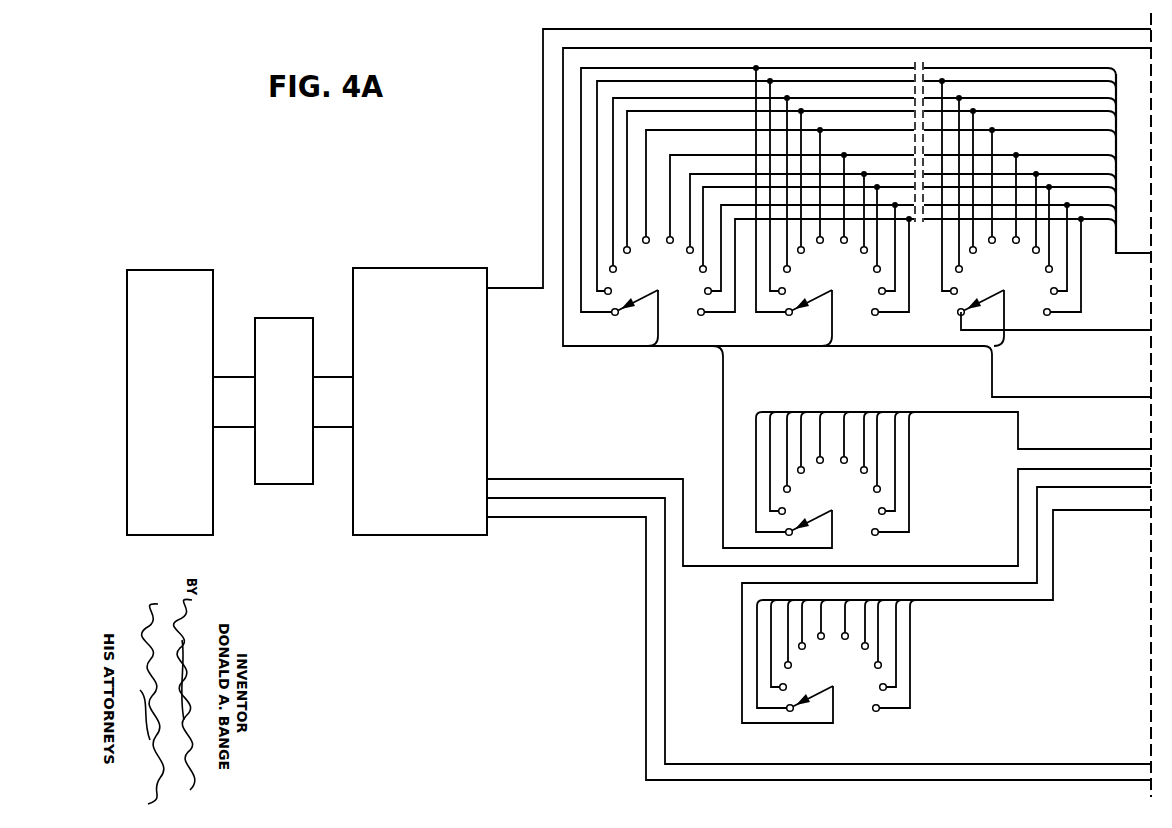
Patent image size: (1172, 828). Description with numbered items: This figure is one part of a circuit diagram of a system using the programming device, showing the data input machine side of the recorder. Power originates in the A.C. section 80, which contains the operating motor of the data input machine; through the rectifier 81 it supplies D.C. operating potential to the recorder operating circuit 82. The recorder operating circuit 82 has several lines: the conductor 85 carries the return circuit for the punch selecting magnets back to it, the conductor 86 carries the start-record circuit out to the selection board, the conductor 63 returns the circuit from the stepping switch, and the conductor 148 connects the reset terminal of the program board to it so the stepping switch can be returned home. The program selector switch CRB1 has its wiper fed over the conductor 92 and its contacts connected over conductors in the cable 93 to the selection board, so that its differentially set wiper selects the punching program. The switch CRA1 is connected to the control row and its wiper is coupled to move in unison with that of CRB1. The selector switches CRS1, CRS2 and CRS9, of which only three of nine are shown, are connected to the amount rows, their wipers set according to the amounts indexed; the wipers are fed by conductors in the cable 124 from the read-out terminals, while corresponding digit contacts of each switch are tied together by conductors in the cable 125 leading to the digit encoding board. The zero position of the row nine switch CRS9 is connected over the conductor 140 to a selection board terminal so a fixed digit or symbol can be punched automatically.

The A.C. section 80 is at (184, 536).
The rectifier 81 is at (292, 318).
The recorder operating circuit 82 is at (447, 536).
The conductor 148 is at (542, 154).
The cable 124 is at (577, 348).
The cable 125 is at (1135, 254).
The conductor 140 is at (1073, 331).
The conductor 86 is at (570, 479).
The conductor 85 is at (645, 606).
The conductor 63 is at (950, 764).
The conductor 92 is at (1078, 488).
The cable 93 is at (1022, 601).
The digit selector switch CRS1 is at (848, 207).
The selector switch CRS2 is at (832, 205).
The row 9 selector switch CRS9 is at (1011, 212).
The selector switch CRA1 is at (932, 447).
The program selector switch CRB1 is at (836, 655).